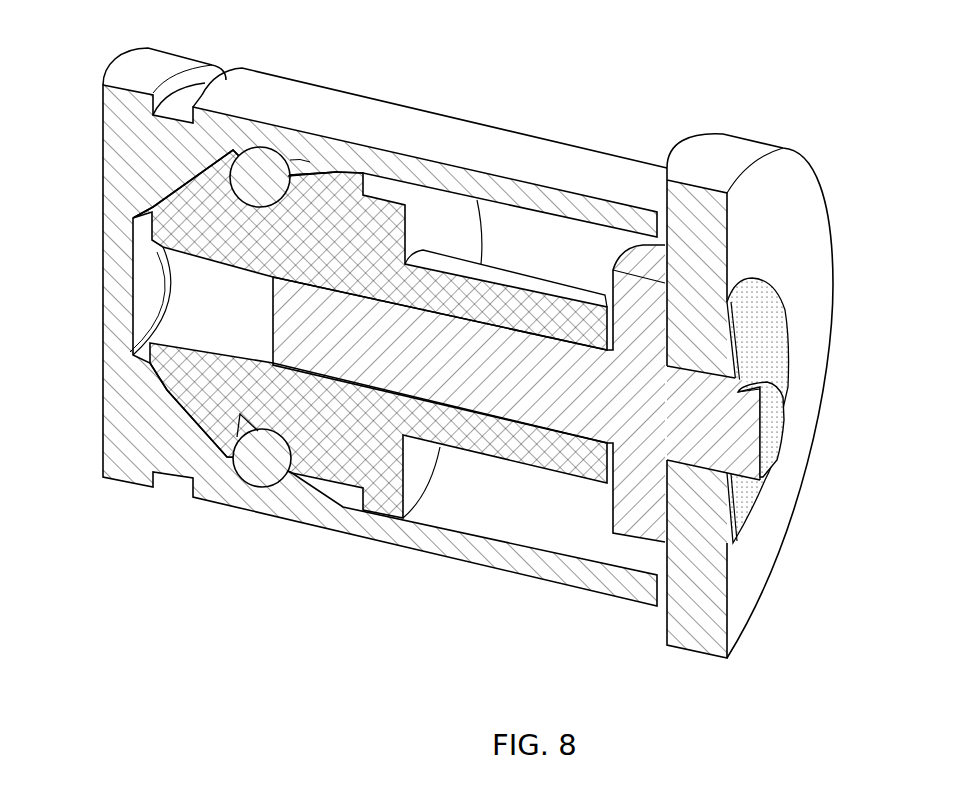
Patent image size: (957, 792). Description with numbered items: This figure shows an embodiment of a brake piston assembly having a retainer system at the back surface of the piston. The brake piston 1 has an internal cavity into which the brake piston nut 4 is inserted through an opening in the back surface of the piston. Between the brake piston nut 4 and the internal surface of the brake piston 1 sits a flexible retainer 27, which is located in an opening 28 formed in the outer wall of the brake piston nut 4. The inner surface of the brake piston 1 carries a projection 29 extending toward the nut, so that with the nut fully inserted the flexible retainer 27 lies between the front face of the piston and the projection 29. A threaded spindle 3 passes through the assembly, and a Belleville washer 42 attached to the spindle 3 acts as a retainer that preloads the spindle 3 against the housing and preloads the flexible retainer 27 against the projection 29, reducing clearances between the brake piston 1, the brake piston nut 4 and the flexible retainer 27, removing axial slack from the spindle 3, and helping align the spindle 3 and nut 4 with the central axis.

The brake piston 1 is at (130, 148).
The threaded spindle 3 is at (527, 397).
The brake piston nut 4 is at (130, 216).
The flexible retainer 27 is at (253, 165).
The opening 28 is at (250, 208).
The projection 29 is at (297, 163).
The Belleville washer 42 is at (773, 310).